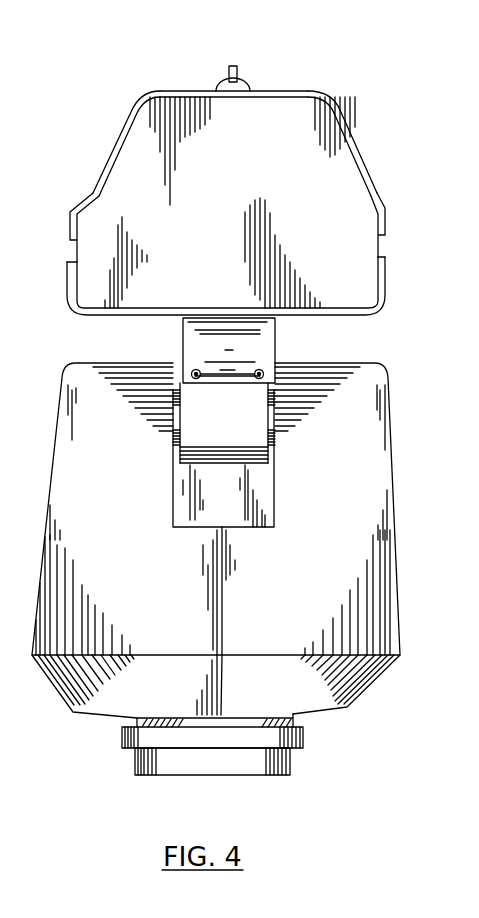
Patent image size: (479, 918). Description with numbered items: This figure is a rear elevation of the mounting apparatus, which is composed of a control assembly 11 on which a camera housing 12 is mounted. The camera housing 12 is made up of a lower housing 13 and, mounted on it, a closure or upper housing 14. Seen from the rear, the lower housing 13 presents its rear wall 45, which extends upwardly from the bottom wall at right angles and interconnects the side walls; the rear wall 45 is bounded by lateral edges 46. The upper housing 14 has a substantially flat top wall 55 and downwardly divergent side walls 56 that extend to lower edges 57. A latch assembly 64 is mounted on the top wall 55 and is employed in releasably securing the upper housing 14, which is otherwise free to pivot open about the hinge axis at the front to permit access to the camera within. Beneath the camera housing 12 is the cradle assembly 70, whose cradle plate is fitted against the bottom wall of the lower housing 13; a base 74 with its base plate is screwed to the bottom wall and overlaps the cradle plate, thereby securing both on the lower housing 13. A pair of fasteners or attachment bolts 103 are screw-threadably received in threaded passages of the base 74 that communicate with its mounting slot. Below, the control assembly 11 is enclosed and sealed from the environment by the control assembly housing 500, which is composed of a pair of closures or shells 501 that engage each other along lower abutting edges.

The control assembly 11 is at (392, 440).
The camera housing 12 is at (358, 155).
The lower housing 13 is at (69, 254).
The upper housing 14 is at (116, 128).
The rear wall 45 is at (234, 214).
The lateral edges 46 is at (345, 131).
The top wall 55 is at (170, 91).
The side walls 56 is at (90, 192).
The lower edges 57 is at (70, 243).
The latch assembly 64 is at (233, 66).
The cradle assembly 70 is at (221, 422).
The base 74 is at (276, 337).
The attachment bolts 103 is at (258, 370).
The control assembly housing 500 is at (400, 568).
The shells 501 is at (113, 579).